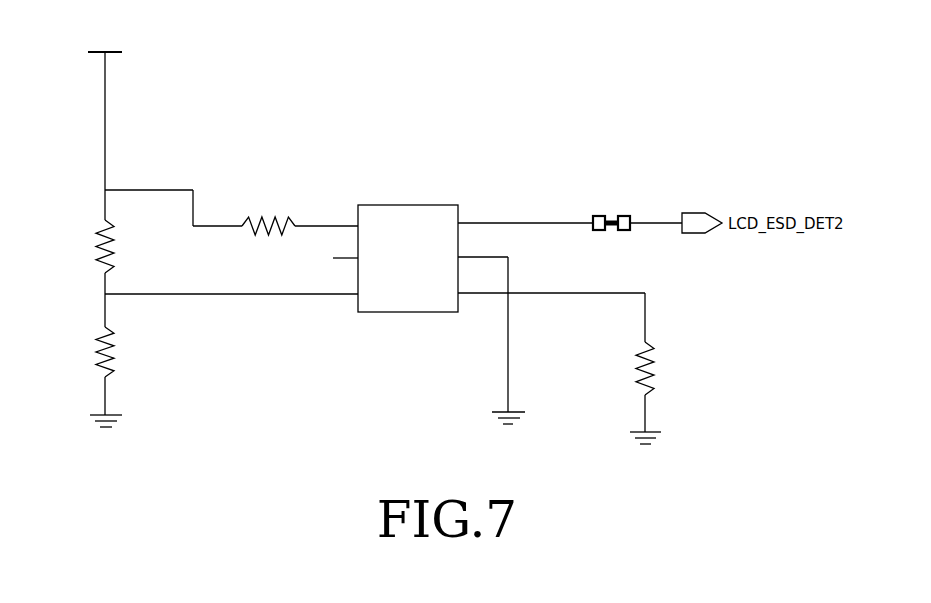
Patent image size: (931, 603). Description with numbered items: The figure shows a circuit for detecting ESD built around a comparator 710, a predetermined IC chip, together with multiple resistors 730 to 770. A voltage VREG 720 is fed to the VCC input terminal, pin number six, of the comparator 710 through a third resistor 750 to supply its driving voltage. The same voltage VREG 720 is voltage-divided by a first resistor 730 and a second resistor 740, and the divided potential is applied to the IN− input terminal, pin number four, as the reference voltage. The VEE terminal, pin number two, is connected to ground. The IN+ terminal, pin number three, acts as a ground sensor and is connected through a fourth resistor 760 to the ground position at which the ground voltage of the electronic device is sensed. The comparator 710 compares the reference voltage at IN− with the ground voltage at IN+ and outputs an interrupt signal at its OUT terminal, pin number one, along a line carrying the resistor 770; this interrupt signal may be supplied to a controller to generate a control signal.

The comparator 710 is at (407, 205).
The voltage VREG 720 is at (115, 52).
The first resistor 730 is at (97, 231).
The second resistor 740 is at (97, 337).
The third resistor 750 is at (262, 217).
The fourth resistor 760 is at (654, 358).
The resistor 770 is at (630, 215).